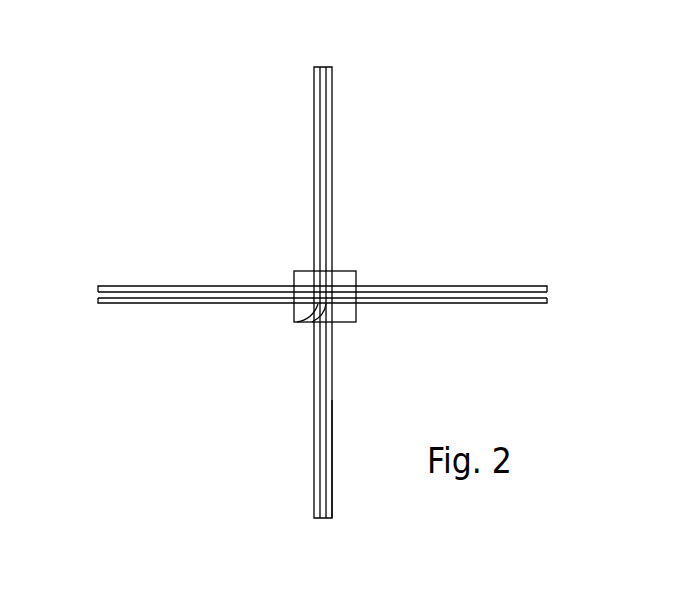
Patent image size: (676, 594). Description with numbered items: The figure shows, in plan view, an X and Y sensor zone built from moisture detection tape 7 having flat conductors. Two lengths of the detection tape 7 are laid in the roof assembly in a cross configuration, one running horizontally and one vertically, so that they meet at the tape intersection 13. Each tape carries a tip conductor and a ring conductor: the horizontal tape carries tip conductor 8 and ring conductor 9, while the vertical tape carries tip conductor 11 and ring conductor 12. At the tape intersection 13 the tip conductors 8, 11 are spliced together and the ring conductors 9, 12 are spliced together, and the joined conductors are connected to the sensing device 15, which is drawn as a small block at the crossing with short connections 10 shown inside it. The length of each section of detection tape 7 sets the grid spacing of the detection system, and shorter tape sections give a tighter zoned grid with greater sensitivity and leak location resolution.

The detection tape 7 is at (310, 167).
The tip conductor 8 is at (98, 292).
The ring conductor 9 is at (98, 300).
The connecting elements 10 is at (312, 322).
The tip conductor 11 is at (320, 521).
The ring conductor 12 is at (329, 521).
The tape intersection 13 is at (330, 226).
The sensing device 15 is at (357, 323).